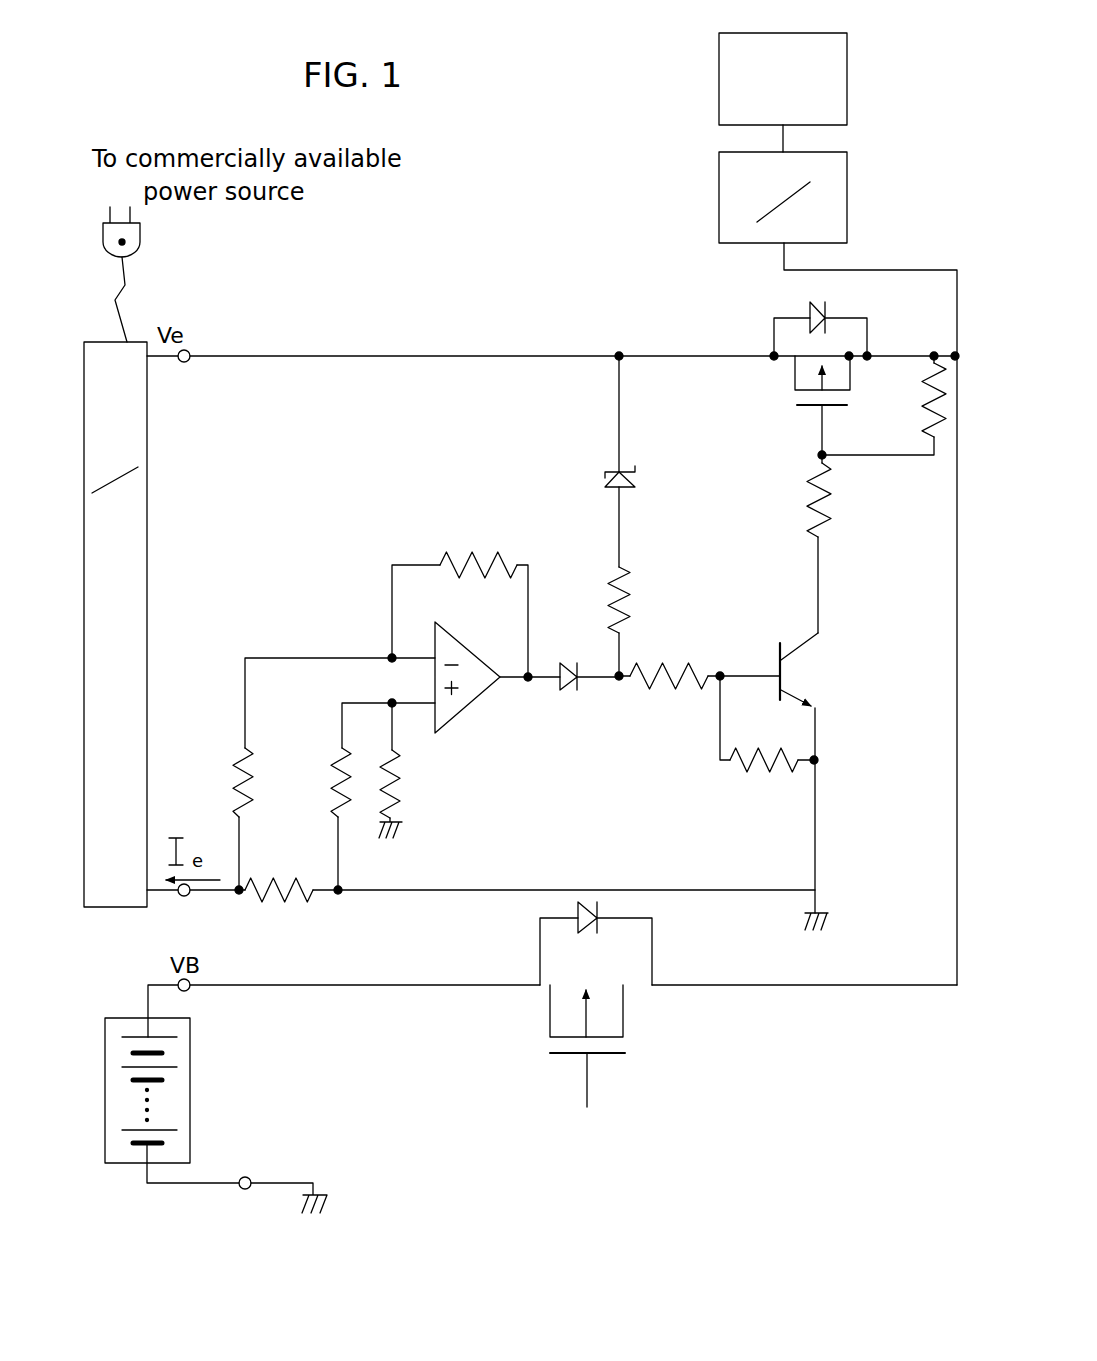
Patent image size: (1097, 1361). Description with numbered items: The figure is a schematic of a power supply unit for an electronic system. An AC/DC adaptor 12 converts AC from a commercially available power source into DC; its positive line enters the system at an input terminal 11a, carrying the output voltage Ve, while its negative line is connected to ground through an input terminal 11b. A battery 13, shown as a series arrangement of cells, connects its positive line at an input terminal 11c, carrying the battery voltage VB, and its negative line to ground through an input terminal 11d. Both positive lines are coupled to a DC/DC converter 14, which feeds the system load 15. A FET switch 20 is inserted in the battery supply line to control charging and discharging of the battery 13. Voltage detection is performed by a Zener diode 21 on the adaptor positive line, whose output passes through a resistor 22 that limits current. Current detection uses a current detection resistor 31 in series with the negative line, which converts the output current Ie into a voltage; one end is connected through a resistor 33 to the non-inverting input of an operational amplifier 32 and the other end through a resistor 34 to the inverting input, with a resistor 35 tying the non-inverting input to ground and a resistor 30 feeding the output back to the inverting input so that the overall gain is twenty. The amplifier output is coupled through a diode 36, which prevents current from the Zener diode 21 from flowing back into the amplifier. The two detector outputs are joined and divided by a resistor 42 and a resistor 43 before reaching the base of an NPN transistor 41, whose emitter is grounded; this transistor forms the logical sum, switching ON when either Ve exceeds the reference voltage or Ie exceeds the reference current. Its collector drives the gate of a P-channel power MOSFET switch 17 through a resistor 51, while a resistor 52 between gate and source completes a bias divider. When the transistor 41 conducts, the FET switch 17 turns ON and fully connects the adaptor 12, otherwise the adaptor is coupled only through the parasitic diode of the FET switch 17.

The input terminal 11a is at (195, 380).
The input terminal 11b is at (178, 910).
The input terminal 11c is at (199, 1001).
The input terminal 11d is at (262, 1166).
The AC/DC adaptor 12 is at (152, 623).
The battery 13 is at (192, 1137).
The DC/DC converter 14 is at (849, 177).
The system load 15 is at (849, 53).
The FET switch 17 is at (795, 304).
The FET switch 20 is at (526, 1006).
The Zener diode 21 is at (592, 466).
The resistor 22 is at (600, 580).
The resistor 30 is at (508, 560).
The current detection resistor 31 is at (283, 885).
The operational amplifier 32 is at (472, 652).
The resistor 33 is at (333, 747).
The resistor 34 is at (228, 747).
The resistor 35 is at (396, 757).
The diode 36 is at (555, 702).
The NPN transistor 41 is at (812, 668).
The resistor 42 is at (667, 687).
The resistor 43 is at (767, 768).
The resistor 51 is at (834, 520).
The resistor 52 is at (920, 417).